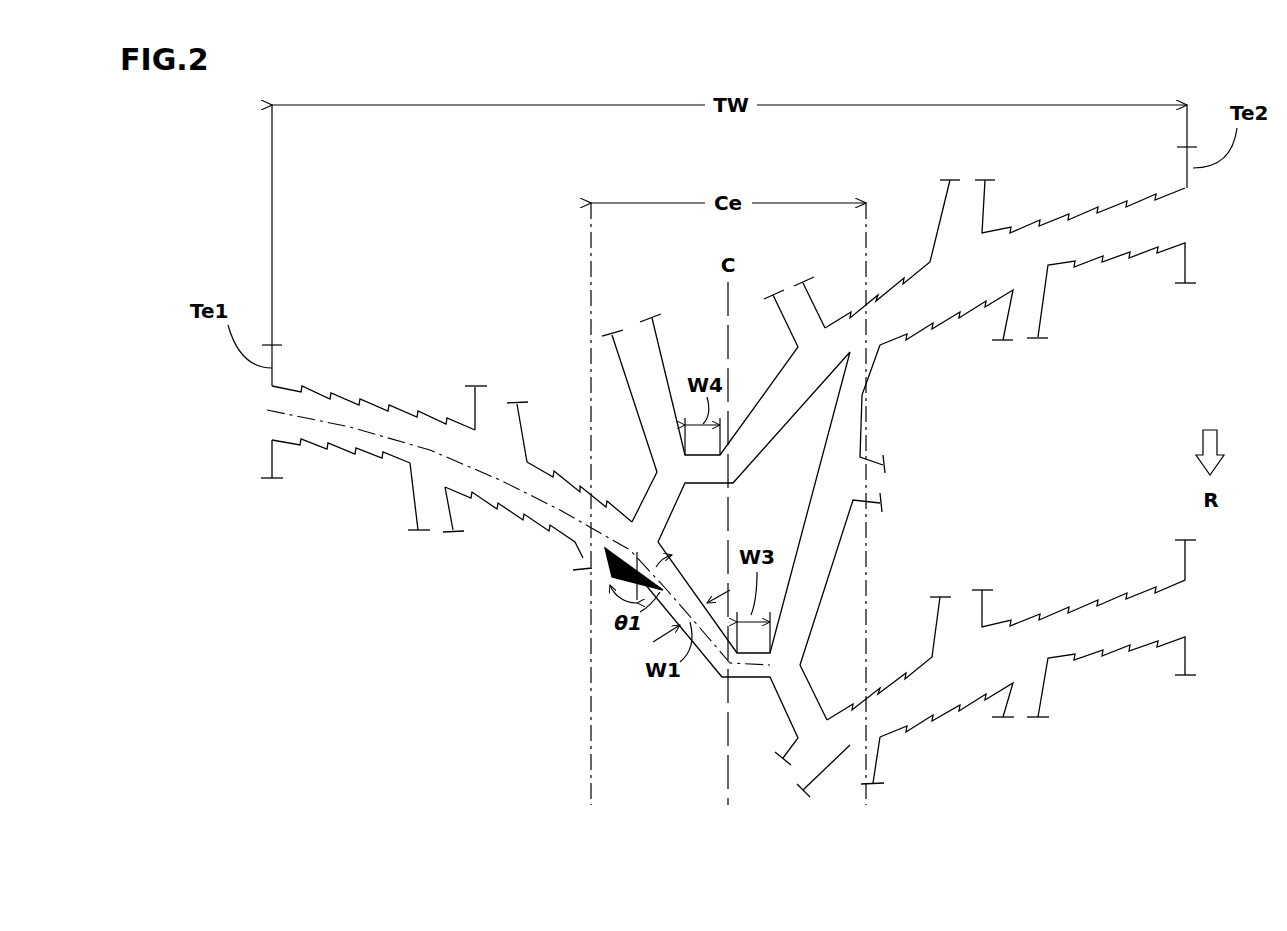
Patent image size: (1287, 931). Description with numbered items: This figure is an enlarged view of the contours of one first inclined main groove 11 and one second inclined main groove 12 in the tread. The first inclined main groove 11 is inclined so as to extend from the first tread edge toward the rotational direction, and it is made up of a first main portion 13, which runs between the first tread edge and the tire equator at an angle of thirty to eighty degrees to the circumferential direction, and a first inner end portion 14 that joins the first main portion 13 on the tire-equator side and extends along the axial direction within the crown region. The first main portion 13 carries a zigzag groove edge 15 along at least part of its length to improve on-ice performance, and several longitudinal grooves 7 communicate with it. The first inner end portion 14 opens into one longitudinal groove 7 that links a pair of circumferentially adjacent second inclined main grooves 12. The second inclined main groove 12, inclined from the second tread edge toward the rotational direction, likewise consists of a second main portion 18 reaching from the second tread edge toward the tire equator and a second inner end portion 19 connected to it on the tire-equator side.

The longitudinal groove 7 is at (507, 411).
The first inclined main groove 11 is at (466, 650).
The second inclined main groove 12 is at (898, 700).
The first main portion 13 is at (541, 504).
The first inner end portion 14 is at (745, 683).
The zigzag groove edge 15 is at (335, 390).
The second main portion 18 is at (946, 292).
The second inner end portion 19 is at (711, 465).